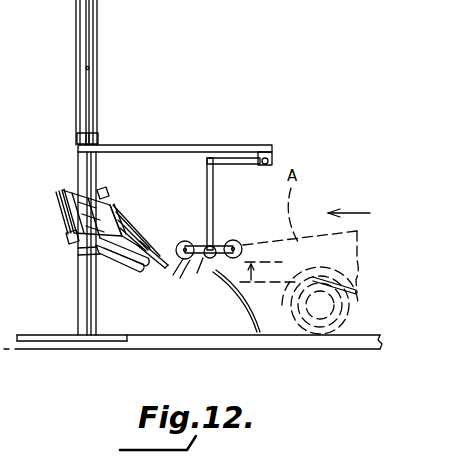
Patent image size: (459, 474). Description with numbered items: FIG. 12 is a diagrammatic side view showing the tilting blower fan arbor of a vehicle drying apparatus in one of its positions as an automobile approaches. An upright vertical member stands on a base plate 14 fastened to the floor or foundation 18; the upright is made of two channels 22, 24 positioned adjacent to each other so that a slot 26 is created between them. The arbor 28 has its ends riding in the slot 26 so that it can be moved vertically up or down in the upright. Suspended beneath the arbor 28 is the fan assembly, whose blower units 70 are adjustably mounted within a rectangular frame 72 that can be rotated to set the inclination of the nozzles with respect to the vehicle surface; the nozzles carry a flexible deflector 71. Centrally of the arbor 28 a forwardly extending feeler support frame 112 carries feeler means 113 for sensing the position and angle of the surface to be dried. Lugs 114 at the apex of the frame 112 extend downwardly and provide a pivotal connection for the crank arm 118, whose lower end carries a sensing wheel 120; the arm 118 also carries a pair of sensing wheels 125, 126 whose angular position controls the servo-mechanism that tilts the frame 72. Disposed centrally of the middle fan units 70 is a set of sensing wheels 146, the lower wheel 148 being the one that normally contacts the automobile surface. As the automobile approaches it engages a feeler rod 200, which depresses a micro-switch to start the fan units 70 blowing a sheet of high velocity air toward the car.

The channel 22 is at (77, 46).
The channel 24 is at (91, 38).
The slot 26 is at (84, 62).
The arbor 28 is at (74, 132).
The feeler support frame 112 is at (136, 142).
The lugs 114 is at (273, 162).
The crank arm 118 is at (207, 179).
The feeler means 113 is at (203, 238).
The sensing wheel 125 is at (237, 240).
The sensing wheel 120 is at (207, 259).
The rectangular frame 72 is at (110, 192).
The blower units 70 is at (136, 228).
The flexible deflector 71 is at (163, 250).
The lower wheel 148 is at (131, 272).
The sensing wheel 126 is at (178, 258).
The set of sensing wheels 146 is at (120, 261).
The feeler rod 200 is at (230, 301).
The base plate 14 is at (58, 340).
The floor or foundation 18 is at (201, 336).